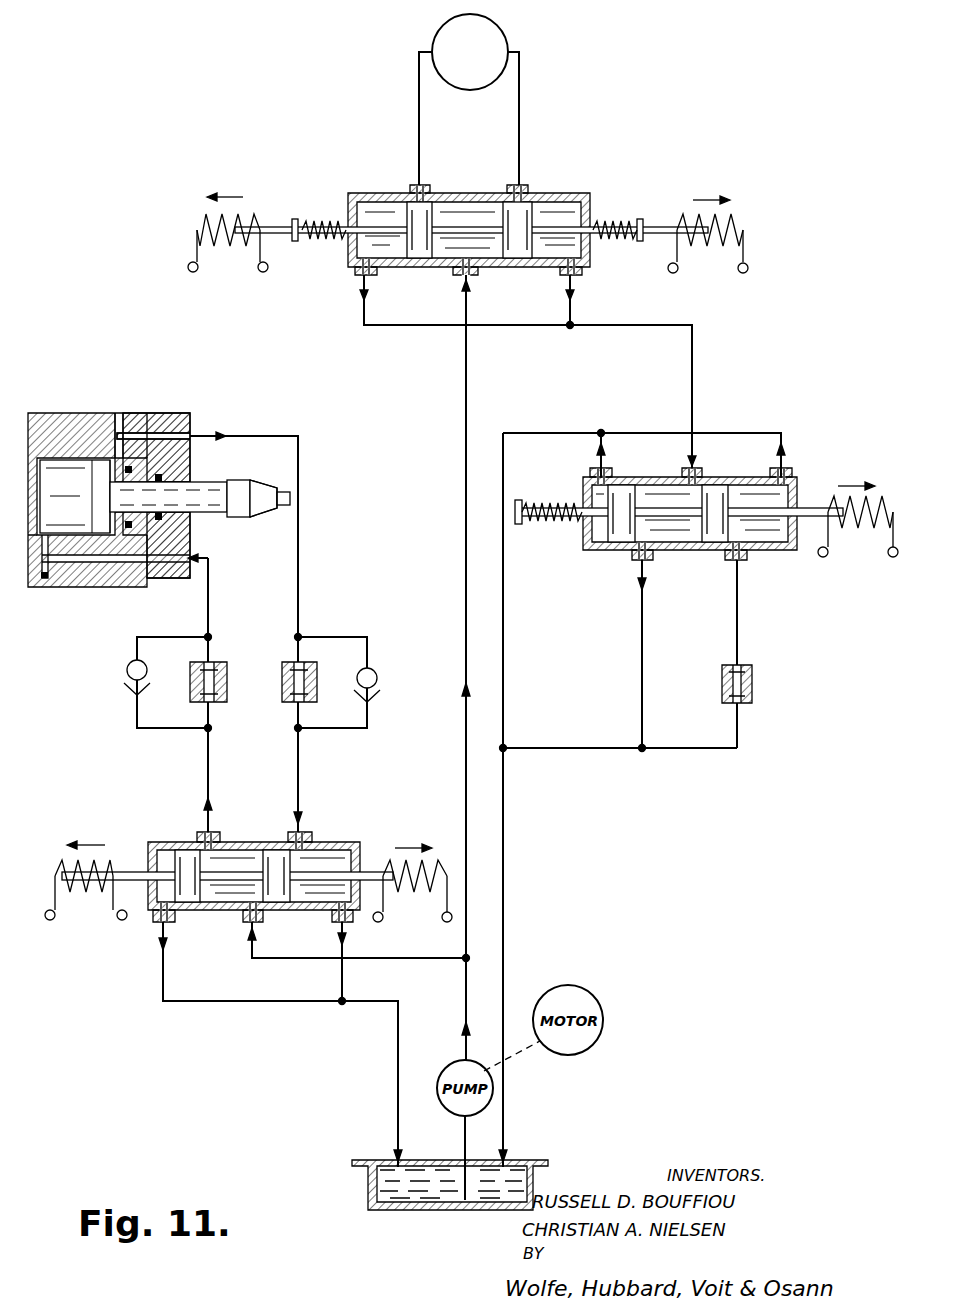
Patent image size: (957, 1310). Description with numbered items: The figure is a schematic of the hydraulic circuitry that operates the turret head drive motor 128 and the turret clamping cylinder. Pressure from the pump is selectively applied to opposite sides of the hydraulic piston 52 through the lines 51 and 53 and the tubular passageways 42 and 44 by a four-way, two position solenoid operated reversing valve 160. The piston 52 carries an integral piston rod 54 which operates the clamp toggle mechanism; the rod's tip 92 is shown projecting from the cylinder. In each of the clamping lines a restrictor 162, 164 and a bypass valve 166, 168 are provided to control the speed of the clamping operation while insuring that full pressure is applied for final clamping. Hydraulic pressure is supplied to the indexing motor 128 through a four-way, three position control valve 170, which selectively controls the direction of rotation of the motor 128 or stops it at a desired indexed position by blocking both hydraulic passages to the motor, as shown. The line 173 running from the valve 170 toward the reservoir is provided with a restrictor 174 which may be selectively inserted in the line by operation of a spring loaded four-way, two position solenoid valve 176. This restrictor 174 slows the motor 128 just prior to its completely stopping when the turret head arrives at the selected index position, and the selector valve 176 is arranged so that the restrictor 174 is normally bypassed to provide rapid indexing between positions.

The turret head drive motor 128 is at (438, 25).
The four-way, three position control valve 170 is at (382, 186).
The spring loaded four-way, two position solenoid valve 176 is at (727, 467).
The line 173 is at (738, 638).
The restrictor 174 is at (752, 683).
The tubular passageway 42 is at (122, 562).
The tubular passageway 44 is at (160, 432).
The hydraulic piston 52 is at (100, 488).
The piston rod 54 is at (200, 490).
The rod tip 92 is at (243, 522).
The return line 53 is at (302, 577).
The supply line 51 is at (212, 608).
The bypass valve 166 is at (125, 688).
The bypass valve 168 is at (379, 671).
The restrictor 162 is at (217, 663).
The restrictor 164 is at (295, 702).
The four-way, two position solenoid operated reversing valve 160 is at (208, 932).